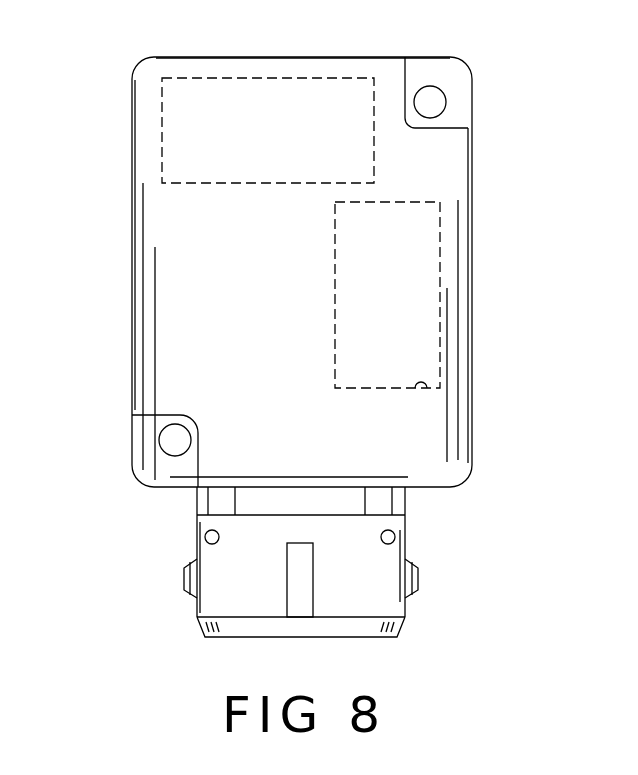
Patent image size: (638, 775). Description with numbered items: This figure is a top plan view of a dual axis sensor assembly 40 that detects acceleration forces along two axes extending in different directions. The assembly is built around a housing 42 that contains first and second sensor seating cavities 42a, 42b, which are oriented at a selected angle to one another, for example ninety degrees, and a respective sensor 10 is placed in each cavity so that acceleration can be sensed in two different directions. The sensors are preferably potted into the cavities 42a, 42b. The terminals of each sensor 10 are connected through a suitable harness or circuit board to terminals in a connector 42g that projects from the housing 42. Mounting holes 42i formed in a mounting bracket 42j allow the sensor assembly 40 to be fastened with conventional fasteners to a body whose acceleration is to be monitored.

The sensor 10 is at (165, 153).
The dual axis sensor assembly 40 is at (110, 268).
The housing 42 is at (474, 268).
The sensor seating cavity 42a is at (373, 128).
The sensor seating cavity 42b is at (426, 387).
The connector 42g is at (382, 560).
The mounting holes 42i is at (423, 90).
The mounting bracket 42j is at (457, 74).